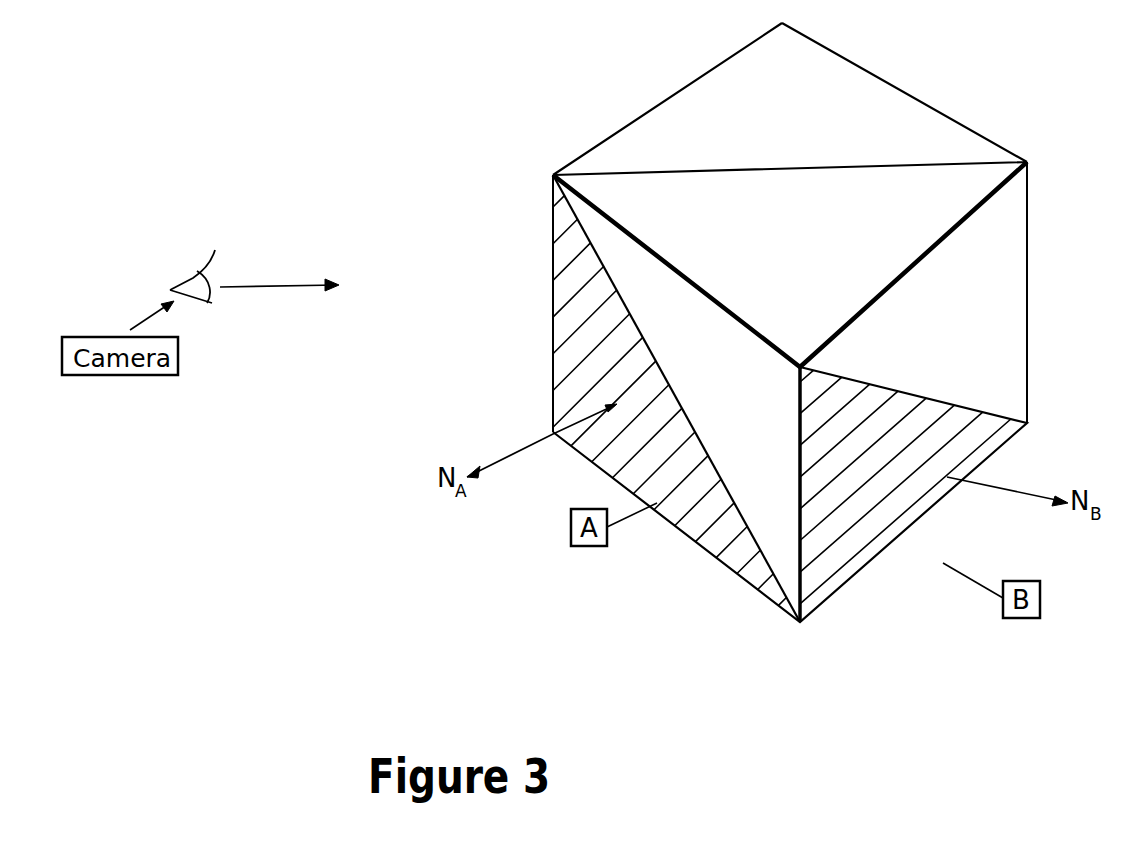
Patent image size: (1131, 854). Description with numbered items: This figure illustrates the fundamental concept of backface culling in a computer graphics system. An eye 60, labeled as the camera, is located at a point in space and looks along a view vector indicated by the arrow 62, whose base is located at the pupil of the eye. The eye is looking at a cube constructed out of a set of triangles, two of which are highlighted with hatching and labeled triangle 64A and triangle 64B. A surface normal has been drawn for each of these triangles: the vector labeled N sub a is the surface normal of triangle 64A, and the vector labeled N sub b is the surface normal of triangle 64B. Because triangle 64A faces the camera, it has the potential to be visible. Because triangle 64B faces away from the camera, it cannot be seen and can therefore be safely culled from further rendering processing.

The eye 60 is at (190, 280).
The view vector arrow 62 is at (262, 288).
The triangle 64A is at (553, 280).
The triangle 64B is at (1012, 438).